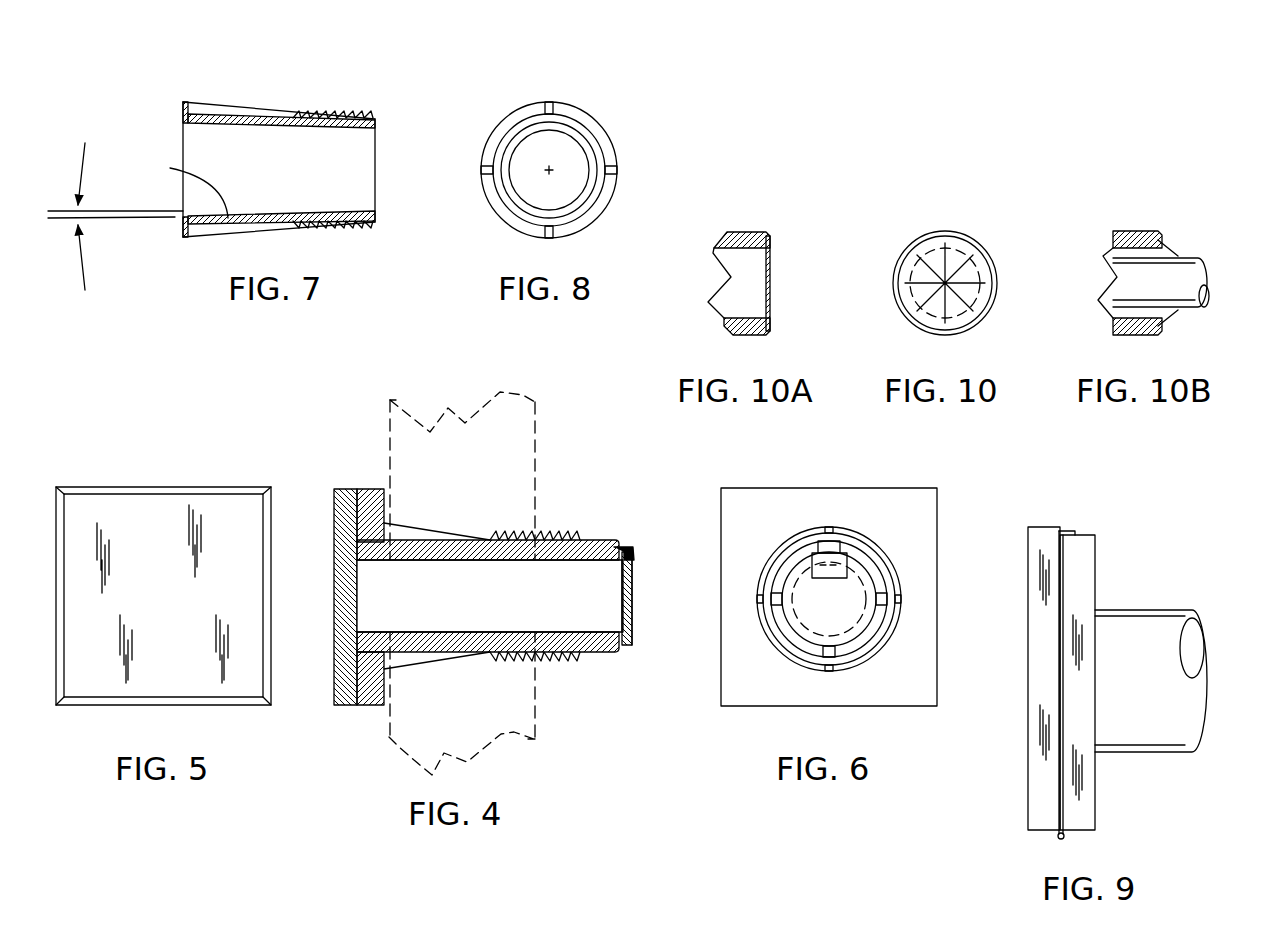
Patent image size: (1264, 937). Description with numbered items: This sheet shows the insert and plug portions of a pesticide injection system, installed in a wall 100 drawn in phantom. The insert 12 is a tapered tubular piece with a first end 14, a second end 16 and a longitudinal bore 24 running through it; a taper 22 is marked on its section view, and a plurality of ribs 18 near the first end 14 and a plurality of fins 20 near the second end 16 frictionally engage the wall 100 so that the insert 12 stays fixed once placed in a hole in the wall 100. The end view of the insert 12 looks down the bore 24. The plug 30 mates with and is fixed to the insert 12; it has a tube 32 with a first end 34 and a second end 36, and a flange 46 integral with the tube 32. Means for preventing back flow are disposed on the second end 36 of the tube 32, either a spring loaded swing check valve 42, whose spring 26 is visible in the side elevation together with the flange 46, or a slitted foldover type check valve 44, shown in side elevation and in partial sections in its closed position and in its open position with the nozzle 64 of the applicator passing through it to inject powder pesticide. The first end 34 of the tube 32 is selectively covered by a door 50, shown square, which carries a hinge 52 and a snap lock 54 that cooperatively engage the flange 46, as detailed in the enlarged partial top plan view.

In FIG. 7, the insert 12 is at (236, 167).
In FIG. 8, the insert 12 is at (571, 152).
In FIG. 4, the insert 12 is at (525, 579).
In FIG. 7, the first end 14 is at (185, 115).
In FIG. 7, the second end 16 is at (378, 121).
In FIG. 7, the ribs 18 is at (222, 101).
In FIG. 7, the fins 20 is at (333, 108).
In FIG. 7, the taper 22 is at (80, 210).
In FIG. 8, the longitudinal bore 24 is at (546, 172).
In FIG. 4, the spring 26 is at (633, 551).
In FIG. 6, the spring 26 is at (822, 556).
In FIG. 5, the plug 30 is at (163, 548).
In FIG. 4, the plug 30 is at (335, 606).
In FIG. 10A, the tube 32 is at (776, 259).
In FIG. 10B, the tube 32 is at (1152, 231).
In FIG. 4, the tube 32 is at (513, 558).
In FIG. 9, the tube 32 is at (1165, 610).
In FIG. 4, the first end 34 is at (358, 600).
In FIG. 4, the second end 36 is at (622, 600).
In FIG. 4, the spring loaded swing check valve 42 is at (633, 603).
In FIG. 6, the spring loaded swing check valve 42 is at (825, 604).
In FIG. 10A, the slitted foldover type check valve 44 is at (772, 252).
In FIG. 10, the slitted foldover type check valve 44 is at (955, 255).
In FIG. 10B, the slitted foldover type check valve 44 is at (1170, 313).
In FIG. 4, the flange 46 is at (372, 489).
In FIG. 6, the flange 46 is at (892, 532).
In FIG. 9, the flange 46 is at (1078, 603).
In FIG. 5, the door 50 is at (149, 602).
In FIG. 4, the door 50 is at (336, 490).
In FIG. 9, the door 50 is at (1043, 648).
In FIG. 9, the hinge 52 is at (1065, 830).
In FIG. 9, the snap lock 54 is at (1078, 529).
In FIG. 10B, the nozzle 64 is at (1168, 278).
In FIG. 4, the wall 100 is at (443, 726).